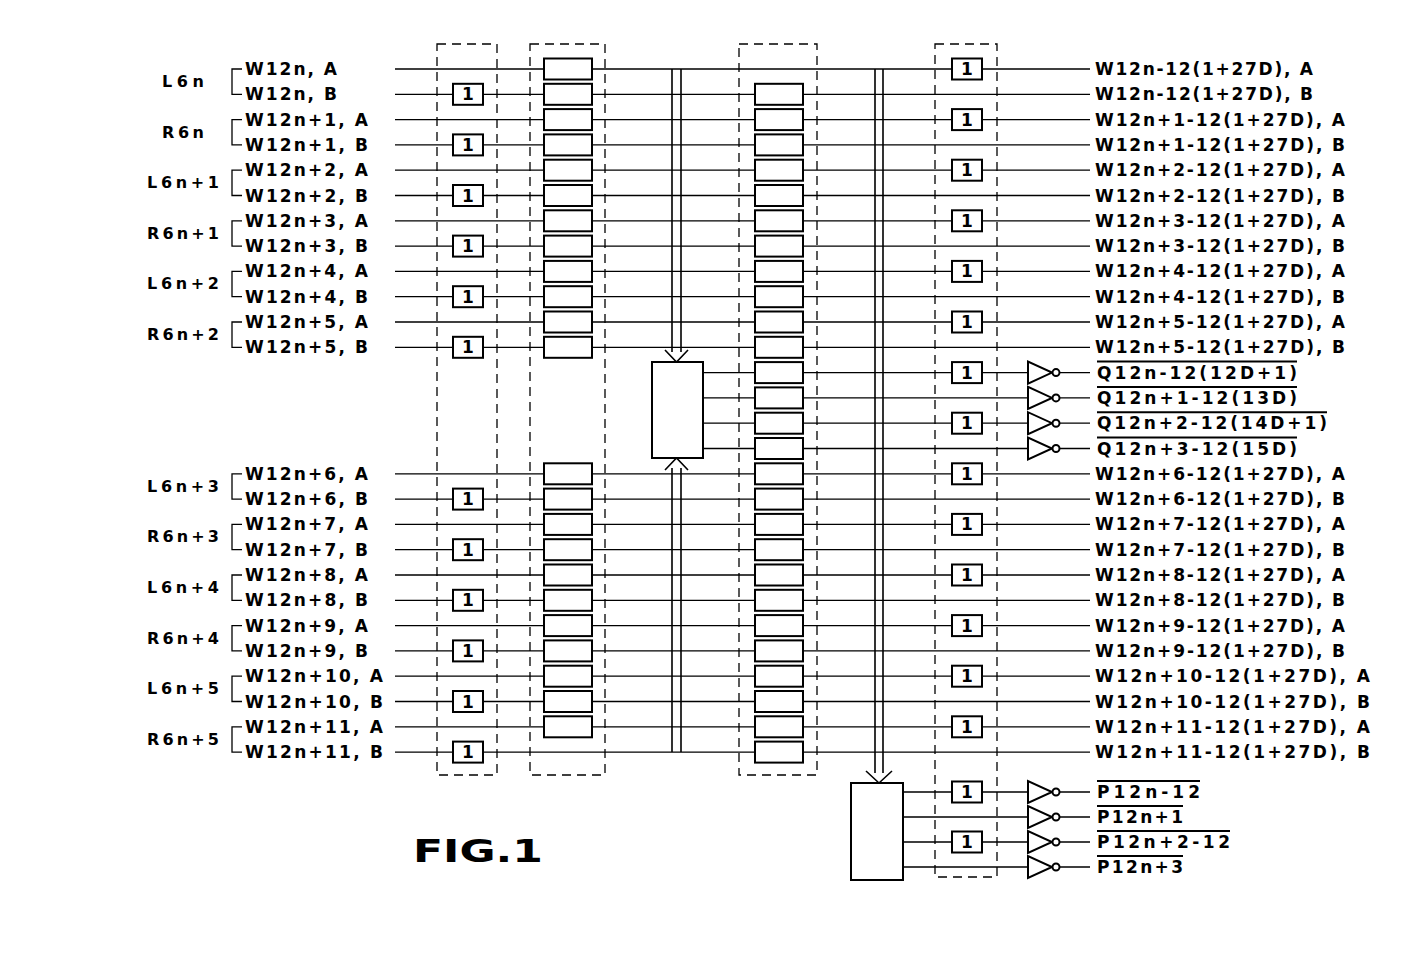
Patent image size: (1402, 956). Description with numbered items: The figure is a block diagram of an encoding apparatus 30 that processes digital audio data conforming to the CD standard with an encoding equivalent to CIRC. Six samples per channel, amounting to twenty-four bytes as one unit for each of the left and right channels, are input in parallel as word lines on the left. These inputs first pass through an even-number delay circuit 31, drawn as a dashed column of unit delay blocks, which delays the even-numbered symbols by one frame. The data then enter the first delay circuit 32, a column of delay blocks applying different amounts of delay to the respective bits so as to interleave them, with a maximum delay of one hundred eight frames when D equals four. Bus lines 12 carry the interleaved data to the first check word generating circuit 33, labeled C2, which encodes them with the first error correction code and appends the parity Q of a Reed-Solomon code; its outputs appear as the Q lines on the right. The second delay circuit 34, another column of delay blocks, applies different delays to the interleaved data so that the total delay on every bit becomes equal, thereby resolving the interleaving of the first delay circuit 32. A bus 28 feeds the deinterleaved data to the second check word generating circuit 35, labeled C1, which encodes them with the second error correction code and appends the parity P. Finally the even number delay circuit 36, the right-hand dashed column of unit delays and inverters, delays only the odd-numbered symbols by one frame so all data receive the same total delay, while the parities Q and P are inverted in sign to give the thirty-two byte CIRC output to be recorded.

The bus lines to second counter C2 12 is at (662, 353).
The bus line to first counter C1 28 is at (884, 772).
The encoding apparatus 30 is at (627, 794).
The even-number delay circuit 31 is at (462, 777).
The first delay circuit 32 is at (572, 777).
The first check word generating circuit 33 is at (652, 431).
The second delay circuit 34 is at (737, 762).
The second check word generating circuit 35 is at (851, 836).
The even number delay circuit 36 is at (997, 774).